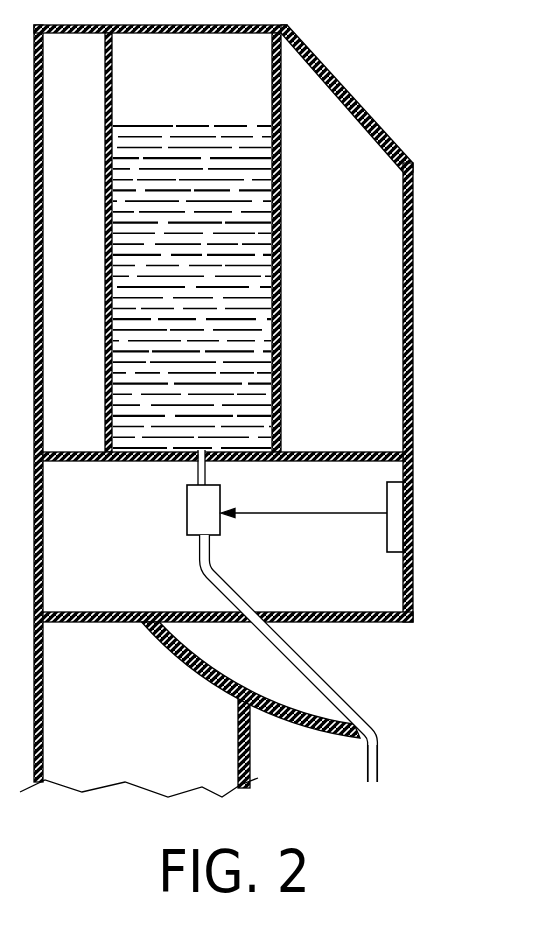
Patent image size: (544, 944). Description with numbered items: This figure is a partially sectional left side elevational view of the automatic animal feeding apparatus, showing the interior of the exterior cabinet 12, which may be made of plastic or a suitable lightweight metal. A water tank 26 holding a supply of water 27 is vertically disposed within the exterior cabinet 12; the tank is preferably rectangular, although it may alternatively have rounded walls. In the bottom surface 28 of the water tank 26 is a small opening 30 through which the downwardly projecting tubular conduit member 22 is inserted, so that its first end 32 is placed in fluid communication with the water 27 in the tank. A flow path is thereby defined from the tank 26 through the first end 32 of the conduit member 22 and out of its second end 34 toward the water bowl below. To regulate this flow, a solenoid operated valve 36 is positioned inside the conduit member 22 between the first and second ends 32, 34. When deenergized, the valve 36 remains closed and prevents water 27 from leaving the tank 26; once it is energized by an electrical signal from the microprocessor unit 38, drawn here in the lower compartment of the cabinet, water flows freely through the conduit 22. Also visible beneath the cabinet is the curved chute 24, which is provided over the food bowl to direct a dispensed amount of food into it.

The exterior cabinet 12 is at (413, 281).
The tubular conduit member 22 is at (328, 687).
The curved chute 24 is at (218, 672).
The water tank 26 is at (281, 107).
The water 27 is at (281, 244).
The bottom surface 28 is at (117, 462).
The small opening 30 is at (197, 463).
The first end 32 is at (206, 474).
The second end 34 is at (378, 774).
The solenoid operated valve 36 is at (188, 525).
The microprocessor unit 38 is at (393, 534).